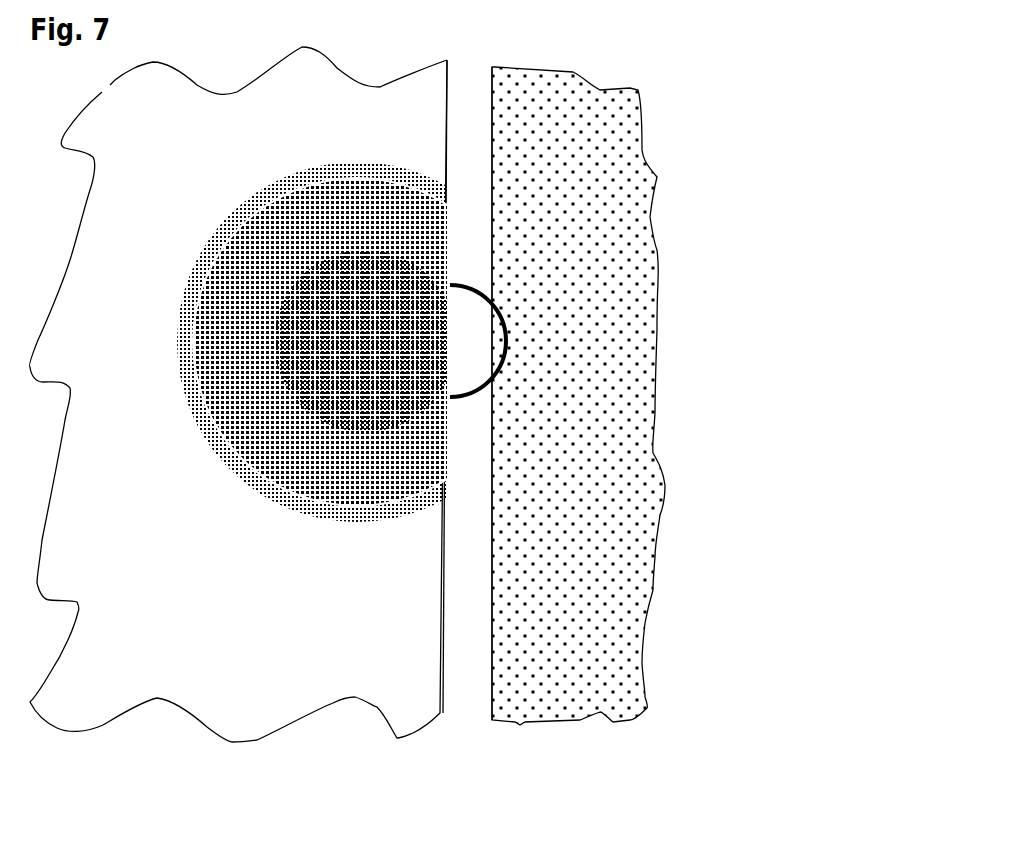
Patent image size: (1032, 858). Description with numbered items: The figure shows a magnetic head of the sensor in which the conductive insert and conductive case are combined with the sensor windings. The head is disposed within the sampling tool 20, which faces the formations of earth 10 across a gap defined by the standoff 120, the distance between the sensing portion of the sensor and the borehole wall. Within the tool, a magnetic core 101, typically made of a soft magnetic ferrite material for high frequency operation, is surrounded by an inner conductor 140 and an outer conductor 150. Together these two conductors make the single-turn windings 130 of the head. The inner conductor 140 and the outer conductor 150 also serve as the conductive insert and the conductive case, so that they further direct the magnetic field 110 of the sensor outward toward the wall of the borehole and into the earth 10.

The sampling tool 20 is at (220, 733).
The standoff 120 is at (470, 532).
The single-turn windings 130 is at (291, 360).
The outer conductor 150 is at (247, 212).
The magnetic core 101 is at (222, 325).
The inner conductor 140 is at (287, 357).
The earth 10 is at (628, 522).
The magnetic field 110 is at (524, 327).